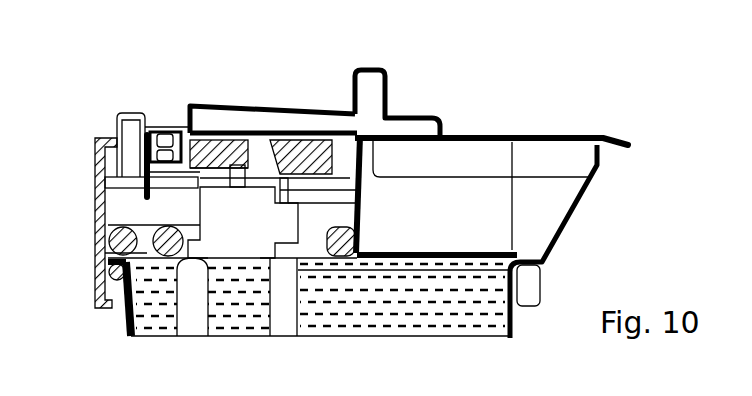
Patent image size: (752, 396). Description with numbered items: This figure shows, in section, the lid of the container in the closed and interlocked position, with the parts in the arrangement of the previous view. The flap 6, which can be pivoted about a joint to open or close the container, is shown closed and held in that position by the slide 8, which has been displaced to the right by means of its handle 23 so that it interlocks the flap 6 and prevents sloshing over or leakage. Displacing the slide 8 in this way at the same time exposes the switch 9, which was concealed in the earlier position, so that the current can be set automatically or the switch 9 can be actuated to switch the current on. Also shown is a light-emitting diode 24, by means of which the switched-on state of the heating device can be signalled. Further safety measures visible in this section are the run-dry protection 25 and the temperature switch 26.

The flap 6 is at (535, 136).
The slide 8 is at (222, 104).
The switch 9 is at (131, 112).
The handle 23 is at (388, 84).
The light-emitting diode 24 is at (168, 138).
The run-dry protection 25 is at (148, 221).
The temperature switch 26 is at (261, 200).